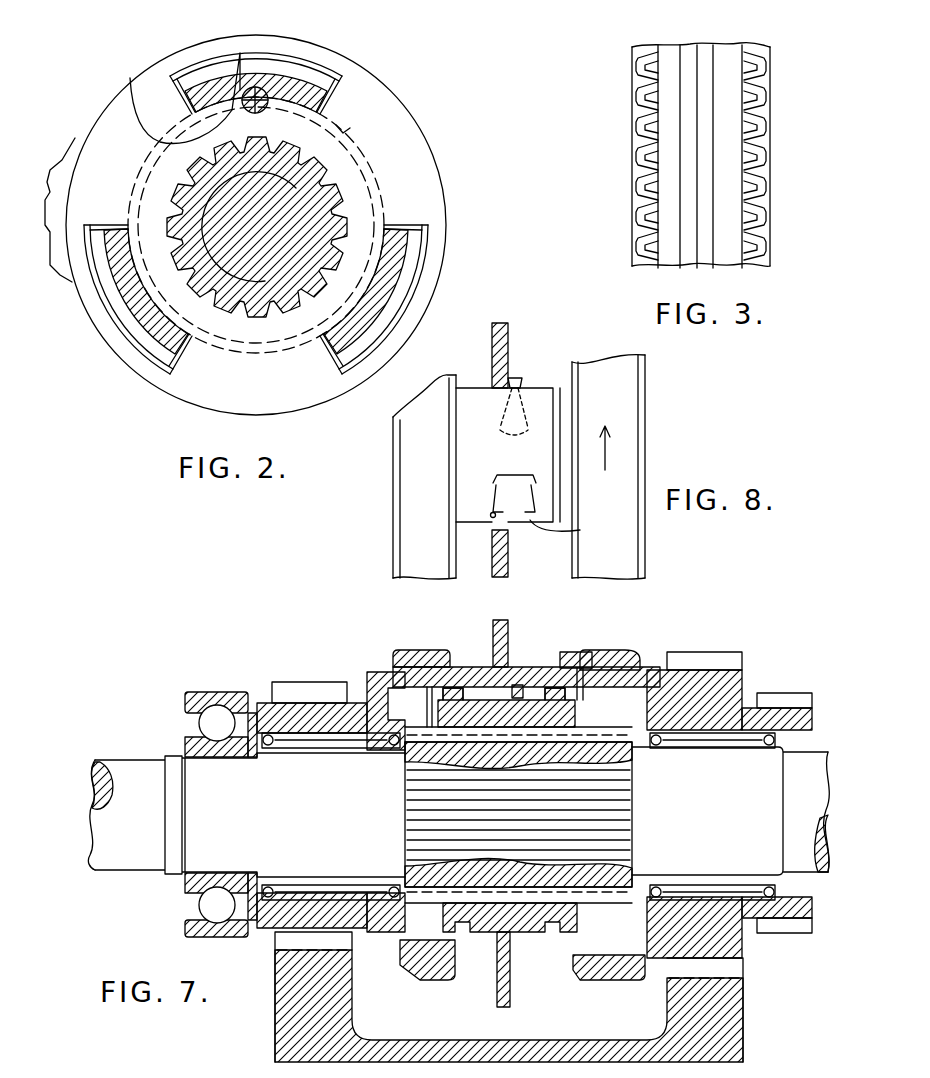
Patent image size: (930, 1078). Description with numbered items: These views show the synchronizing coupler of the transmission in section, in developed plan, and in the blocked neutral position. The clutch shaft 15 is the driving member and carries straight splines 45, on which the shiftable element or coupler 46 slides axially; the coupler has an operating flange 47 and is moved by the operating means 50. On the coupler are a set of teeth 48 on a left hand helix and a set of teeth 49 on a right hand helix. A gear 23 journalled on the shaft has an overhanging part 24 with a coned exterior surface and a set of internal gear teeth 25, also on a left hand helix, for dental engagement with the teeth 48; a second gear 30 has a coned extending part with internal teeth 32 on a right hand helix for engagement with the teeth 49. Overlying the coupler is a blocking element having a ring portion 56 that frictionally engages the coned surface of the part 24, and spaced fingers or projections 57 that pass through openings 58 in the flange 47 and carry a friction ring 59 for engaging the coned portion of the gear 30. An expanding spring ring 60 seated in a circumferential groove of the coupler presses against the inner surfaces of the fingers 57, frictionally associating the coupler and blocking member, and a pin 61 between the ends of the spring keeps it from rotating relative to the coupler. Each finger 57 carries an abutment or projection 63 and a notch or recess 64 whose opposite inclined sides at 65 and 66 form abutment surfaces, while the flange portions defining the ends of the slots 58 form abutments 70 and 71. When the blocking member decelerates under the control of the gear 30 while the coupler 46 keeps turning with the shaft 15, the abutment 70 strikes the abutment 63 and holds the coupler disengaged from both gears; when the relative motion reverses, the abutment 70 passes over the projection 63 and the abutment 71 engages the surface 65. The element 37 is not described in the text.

In FIG. 2, the clutch shaft 15 is at (245, 243).
In FIG. 7, the clutch shaft 15 is at (140, 848).
In FIG. 7, the gear 23 is at (305, 710).
In FIG. 7, the overhanging part 24 is at (375, 672).
In FIG. 7, the internal gear teeth 25 is at (392, 948).
In FIG. 7, the gear 30 is at (725, 646).
In FIG. 7, the internal teeth 32 is at (605, 980).
In FIG. 7, the flange 37 is at (785, 674).
In FIG. 2, the splines 45 is at (340, 190).
In FIG. 7, the splines 45 is at (588, 813).
In FIG. 3, the shiftable element or coupler 46 is at (722, 55).
In FIG. 7, the shiftable element or coupler 46 is at (480, 918).
In FIG. 2, the operating flange 47 is at (430, 188).
In FIG. 3, the operating flange 47 is at (688, 52).
In FIG. 7, the operating flange 47 is at (510, 992).
In FIG. 3, the teeth 48 is at (640, 190).
In FIG. 7, the teeth 48 is at (450, 688).
In FIG. 3, the teeth 49 is at (755, 152).
In FIG. 7, the teeth 49 is at (562, 690).
In FIG. 2, the operating means 50 is at (60, 204).
In FIG. 8, the ring portion 56 is at (418, 500).
In FIG. 7, the ring portion 56 is at (425, 978).
In FIG. 2, the fingers or projections 57 is at (312, 93).
In FIG. 2, the openings 58 is at (305, 72).
In FIG. 8, the openings 58 is at (625, 425).
In FIG. 7, the friction ring 59 is at (600, 668).
In FIG. 2, the expanding spring ring 60 is at (250, 92).
In FIG. 7, the expanding spring ring 60 is at (518, 685).
In FIG. 2, the pin 61 is at (135, 80).
In FIG. 8, the abutment or projection 63 is at (518, 380).
In FIG. 8, the notch or recess 64 is at (492, 468).
In FIG. 8, the abutment surface 65 is at (573, 528).
In FIG. 8, the abutment surface 66 is at (490, 514).
In FIG. 8, the abutment 70 is at (492, 359).
In FIG. 8, the abutment 71 is at (510, 548).